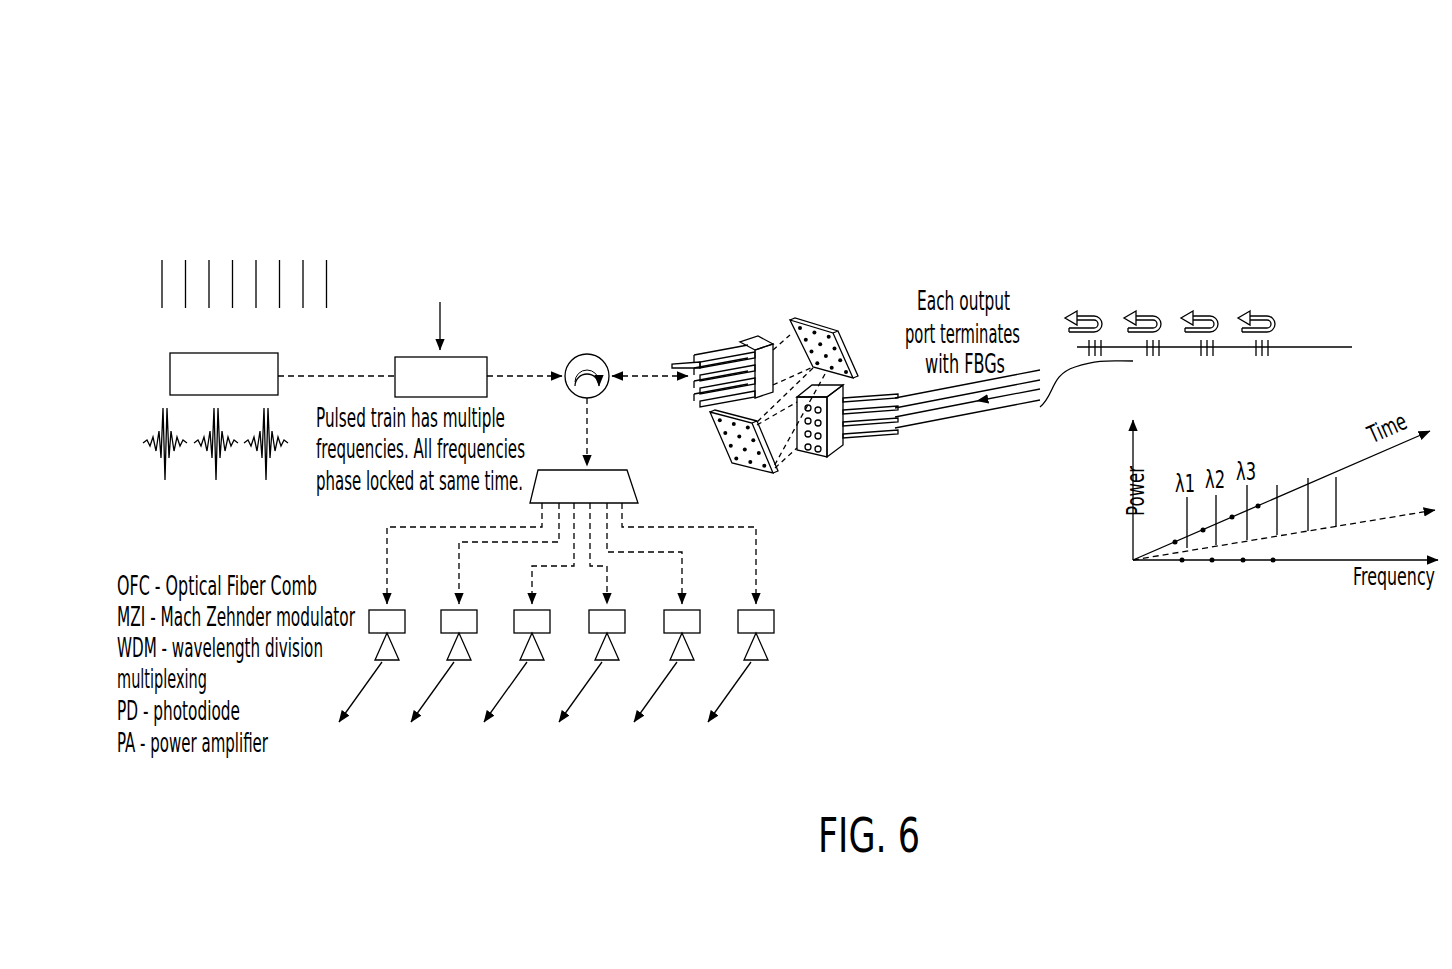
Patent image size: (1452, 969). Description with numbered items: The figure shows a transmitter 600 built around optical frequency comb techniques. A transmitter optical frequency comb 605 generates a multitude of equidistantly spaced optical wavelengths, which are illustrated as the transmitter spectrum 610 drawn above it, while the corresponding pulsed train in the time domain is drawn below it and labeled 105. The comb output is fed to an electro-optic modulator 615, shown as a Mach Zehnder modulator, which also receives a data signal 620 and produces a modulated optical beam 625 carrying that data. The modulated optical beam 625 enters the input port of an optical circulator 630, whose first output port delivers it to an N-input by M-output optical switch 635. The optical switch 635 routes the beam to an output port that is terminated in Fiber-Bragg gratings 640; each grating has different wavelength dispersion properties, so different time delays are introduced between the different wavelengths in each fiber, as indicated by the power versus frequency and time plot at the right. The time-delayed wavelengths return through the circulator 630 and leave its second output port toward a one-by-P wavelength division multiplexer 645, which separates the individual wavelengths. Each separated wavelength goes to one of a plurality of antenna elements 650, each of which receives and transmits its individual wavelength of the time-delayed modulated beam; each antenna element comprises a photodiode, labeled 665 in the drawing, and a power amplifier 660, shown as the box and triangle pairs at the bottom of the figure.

The transmitter 600 is at (180, 150).
The transmitter optical frequency comb 605 is at (170, 370).
The transmitter spectrum 610 is at (243, 232).
The pulsed train in time domain 105 is at (272, 490).
The electro-optic modulator 615 is at (398, 355).
The data signal 620 is at (444, 246).
The modulated optical beam 625 is at (519, 356).
The optical circulator 630 is at (583, 308).
The optical switch 635 is at (775, 467).
The Fiber-Bragg gratings 640 is at (1176, 240).
The wavelength division multiplexer 645 is at (608, 468).
The plurality of antenna elements 650 is at (544, 658).
The power amplifier 660 is at (607, 663).
The photodiode (PD) 665 is at (619, 609).